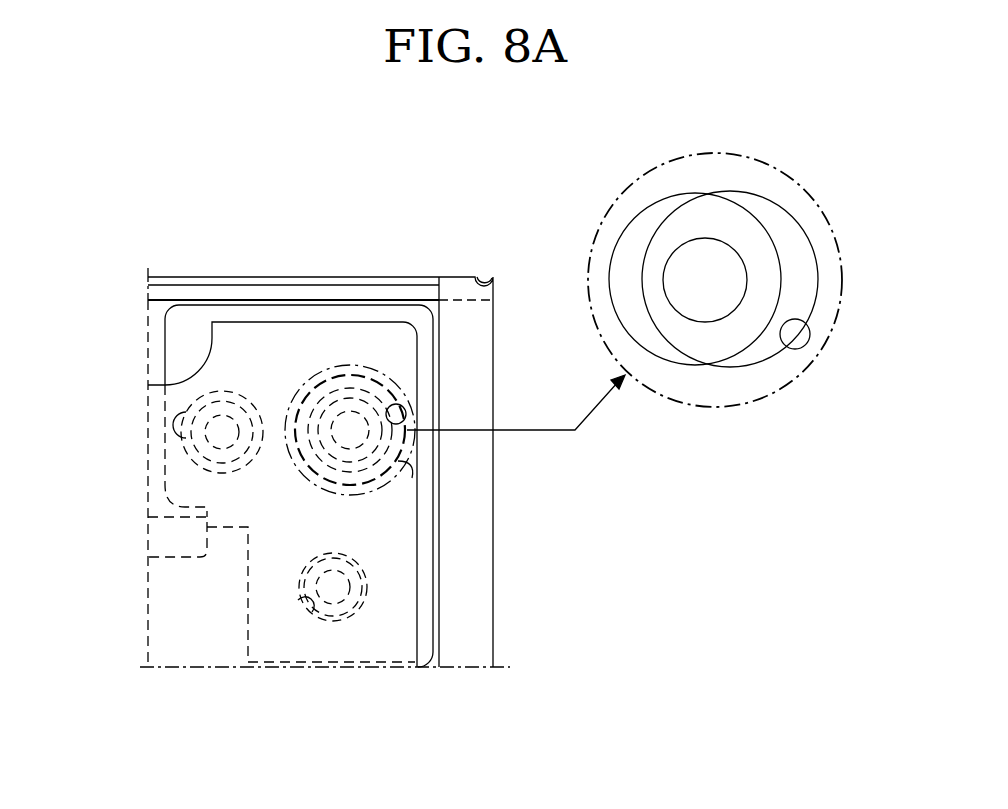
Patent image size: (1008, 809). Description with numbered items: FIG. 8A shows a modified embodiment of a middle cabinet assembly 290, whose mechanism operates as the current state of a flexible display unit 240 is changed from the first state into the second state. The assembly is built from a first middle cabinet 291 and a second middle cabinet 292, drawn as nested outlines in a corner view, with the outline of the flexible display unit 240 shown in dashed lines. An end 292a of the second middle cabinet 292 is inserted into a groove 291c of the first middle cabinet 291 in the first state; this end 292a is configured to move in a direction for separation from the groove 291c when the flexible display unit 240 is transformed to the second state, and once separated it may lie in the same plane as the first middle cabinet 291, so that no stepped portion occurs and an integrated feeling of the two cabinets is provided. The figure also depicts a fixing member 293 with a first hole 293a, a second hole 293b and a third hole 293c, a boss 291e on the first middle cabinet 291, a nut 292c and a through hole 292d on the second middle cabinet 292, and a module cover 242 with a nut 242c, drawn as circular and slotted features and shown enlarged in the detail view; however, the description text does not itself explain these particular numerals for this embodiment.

The middle cabinet assembly 290 is at (257, 246).
The first middle cabinet 291 is at (468, 655).
The groove 291c is at (488, 279).
The housing mounting boss 291e is at (333, 597).
The second middle cabinet 292 is at (148, 289).
The end 292a is at (456, 300).
The support member opening 292c is at (228, 428).
The support member protrusion 292d is at (406, 408).
The lens body 242 is at (175, 393).
The lens barrel 242c is at (355, 435).
The sealing member 293 is at (425, 655).
The sealing member lug 293a is at (300, 600).
The sealing member lug 293b is at (178, 433).
The sealing member lug 293c is at (404, 478).
The flexible display unit 240 is at (157, 613).